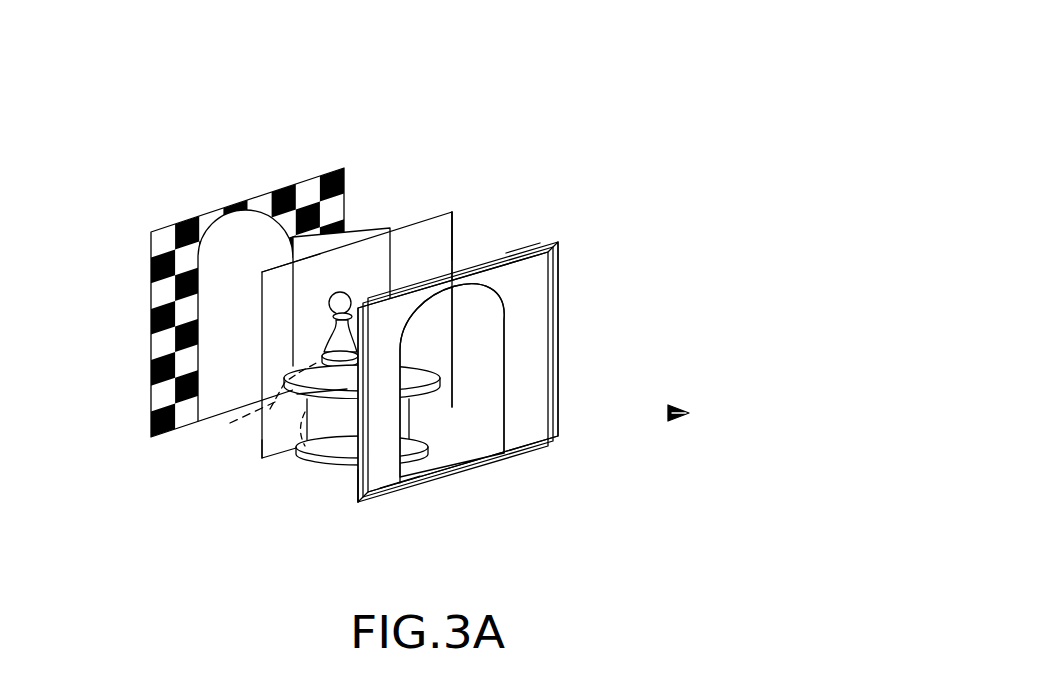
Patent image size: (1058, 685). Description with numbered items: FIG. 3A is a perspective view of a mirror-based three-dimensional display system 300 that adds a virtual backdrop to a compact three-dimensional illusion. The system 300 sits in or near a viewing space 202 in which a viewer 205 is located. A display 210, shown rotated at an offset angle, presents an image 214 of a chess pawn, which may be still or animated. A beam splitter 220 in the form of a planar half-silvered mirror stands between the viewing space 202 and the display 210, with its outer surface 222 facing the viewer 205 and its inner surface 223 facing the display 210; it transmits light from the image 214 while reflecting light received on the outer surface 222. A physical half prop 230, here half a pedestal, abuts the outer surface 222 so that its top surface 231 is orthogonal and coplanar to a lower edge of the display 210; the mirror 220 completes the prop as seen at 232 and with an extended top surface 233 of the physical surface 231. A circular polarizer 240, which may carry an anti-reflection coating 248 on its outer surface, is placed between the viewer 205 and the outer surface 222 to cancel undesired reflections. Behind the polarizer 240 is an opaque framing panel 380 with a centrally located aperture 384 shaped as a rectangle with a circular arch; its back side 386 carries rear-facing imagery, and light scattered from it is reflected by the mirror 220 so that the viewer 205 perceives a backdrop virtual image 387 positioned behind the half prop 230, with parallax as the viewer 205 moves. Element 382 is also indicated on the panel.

The display 210 is at (362, 230).
The beam splitter 220 is at (454, 228).
The outer surface 222 is at (452, 214).
The inner surface 223 is at (292, 267).
The image 214 is at (349, 298).
The half prop 230 is at (302, 378).
The top surface 231 is at (239, 461).
The completed image of the half prop 232 is at (248, 427).
The extended top surface 233 is at (315, 377).
The framing panel 380 is at (601, 353).
The framing panel edge 382 is at (358, 495).
The aperture 384 is at (403, 468).
The back side 386 is at (506, 253).
The backdrop virtual image 387 is at (196, 216).
The polarizer 240 is at (622, 367).
The anti-reflection coating 248 is at (574, 367).
The viewer 205 is at (705, 399).
The viewing space 202 is at (693, 516).
The mirror-based 3D display system 300 is at (647, 118).